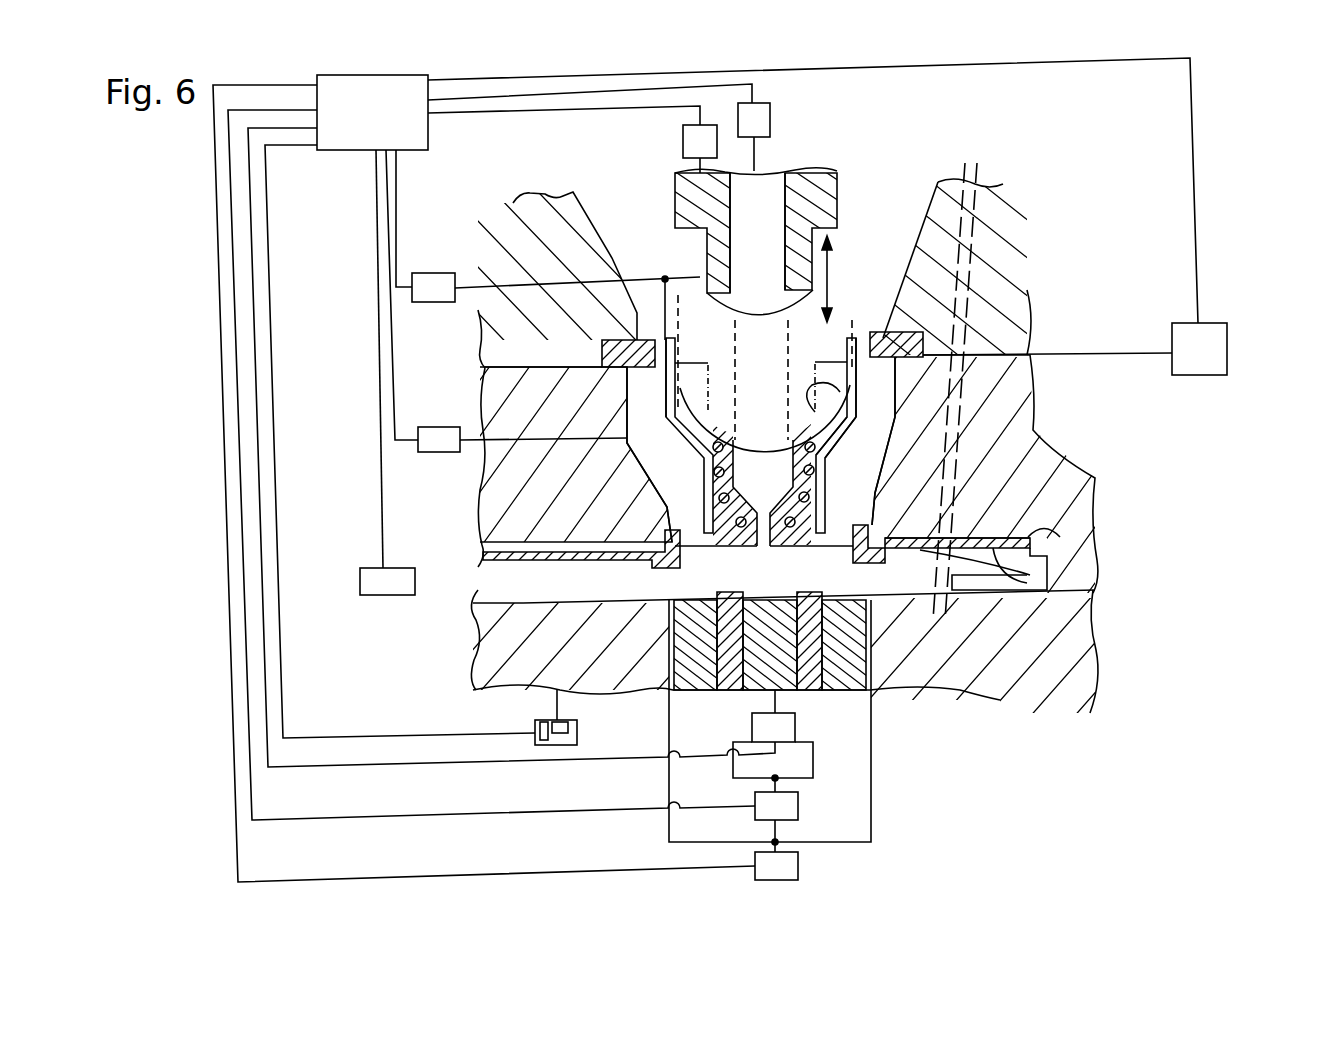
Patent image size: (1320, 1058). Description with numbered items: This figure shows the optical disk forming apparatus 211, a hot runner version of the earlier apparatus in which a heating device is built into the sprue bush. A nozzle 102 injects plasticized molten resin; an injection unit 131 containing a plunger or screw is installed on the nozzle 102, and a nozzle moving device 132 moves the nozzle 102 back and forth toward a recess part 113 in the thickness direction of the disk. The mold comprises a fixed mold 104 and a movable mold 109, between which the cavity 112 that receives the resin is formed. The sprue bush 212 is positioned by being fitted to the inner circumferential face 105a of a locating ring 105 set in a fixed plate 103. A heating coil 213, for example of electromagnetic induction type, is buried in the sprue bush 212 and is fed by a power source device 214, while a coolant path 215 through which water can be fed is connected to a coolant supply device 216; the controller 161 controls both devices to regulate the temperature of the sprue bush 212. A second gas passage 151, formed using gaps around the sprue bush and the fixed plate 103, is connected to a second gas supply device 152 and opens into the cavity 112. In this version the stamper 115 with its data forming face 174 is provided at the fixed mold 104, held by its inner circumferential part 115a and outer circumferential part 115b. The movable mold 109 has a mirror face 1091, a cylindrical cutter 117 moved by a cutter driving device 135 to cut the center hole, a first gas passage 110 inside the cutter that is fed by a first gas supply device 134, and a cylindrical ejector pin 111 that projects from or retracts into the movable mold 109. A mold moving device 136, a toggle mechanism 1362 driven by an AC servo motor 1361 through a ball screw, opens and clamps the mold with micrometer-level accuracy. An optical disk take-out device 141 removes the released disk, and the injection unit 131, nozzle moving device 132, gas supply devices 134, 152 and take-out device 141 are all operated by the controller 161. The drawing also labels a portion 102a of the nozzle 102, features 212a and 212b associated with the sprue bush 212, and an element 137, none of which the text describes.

The controller 161 is at (428, 142).
The coolant supply device 216 is at (432, 273).
The power source device 214 is at (418, 438).
The optical disk take-out device 141 is at (383, 595).
The second gas supply device 152 is at (1227, 350).
The injection unit 131 is at (771, 120).
The nozzle moving device 132 is at (683, 145).
The nozzle 102 is at (722, 257).
The upper punch core 102a is at (768, 190).
The recess part 113 is at (828, 370).
The fixed plate 103 is at (935, 242).
The fixed mold 104 is at (545, 458).
The locating ring 105 is at (915, 345).
The inner circumferential face 105a is at (647, 391).
The second gas passage 151 is at (690, 480).
The heating coil 213 is at (690, 500).
The sprue bush 212 is at (913, 420).
The insert inner surface 212a is at (883, 457).
The insert outer surface 212b is at (885, 428).
The coolant path 215 is at (650, 455).
The stamper 115 is at (1047, 583).
The inner circumferential part 115a is at (1047, 525).
The outer circumferential part 115b is at (1045, 532).
The data forming face 174 is at (1030, 565).
The cavity 112 is at (1030, 590).
The movable mold 109 is at (1090, 643).
The mirror face 1091 is at (523, 603).
The first gas passage 110 is at (672, 692).
The cylindrical cutter 117 is at (714, 690).
The cylindrical ejector pin 111 is at (780, 687).
The mold moving device 136 is at (578, 713).
The AC servo motor 1361 is at (535, 742).
The toggle mechanism 1362 is at (535, 722).
The actuator 137 is at (813, 758).
The cutter driving device 135 is at (798, 808).
The first gas supply device 134 is at (798, 866).
The optical disk forming apparatus 211 is at (1043, 176).